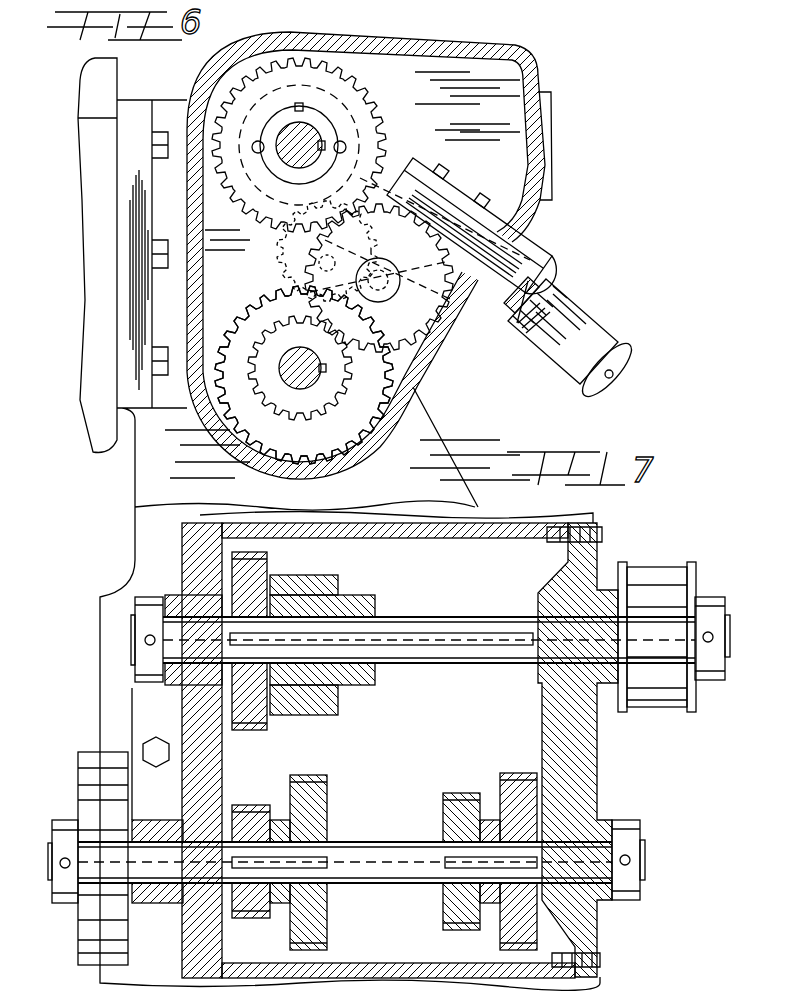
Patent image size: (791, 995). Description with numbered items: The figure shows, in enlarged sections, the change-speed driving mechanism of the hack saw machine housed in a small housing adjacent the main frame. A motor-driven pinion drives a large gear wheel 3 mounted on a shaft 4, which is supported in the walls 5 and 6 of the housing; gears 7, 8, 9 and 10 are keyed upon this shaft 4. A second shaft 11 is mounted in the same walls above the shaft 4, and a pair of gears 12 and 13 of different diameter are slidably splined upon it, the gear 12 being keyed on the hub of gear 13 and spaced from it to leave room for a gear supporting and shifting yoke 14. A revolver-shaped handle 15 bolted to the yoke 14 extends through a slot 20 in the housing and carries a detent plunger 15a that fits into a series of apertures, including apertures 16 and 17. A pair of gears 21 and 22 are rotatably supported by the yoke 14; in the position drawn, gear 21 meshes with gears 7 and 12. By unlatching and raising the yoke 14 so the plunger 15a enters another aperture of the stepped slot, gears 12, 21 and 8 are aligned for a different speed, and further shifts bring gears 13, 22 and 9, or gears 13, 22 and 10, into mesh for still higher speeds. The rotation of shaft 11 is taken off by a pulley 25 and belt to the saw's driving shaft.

In FIG. 7, the large gear wheel 3 is at (88, 928).
In FIG. 6, the shaft 4 is at (318, 372).
In FIG. 7, the shaft 4 is at (380, 868).
In FIG. 7, the wall 5 is at (232, 760).
In FIG. 7, the wall 6 is at (590, 748).
In FIG. 6, the gear 7 is at (282, 350).
In FIG. 7, the gear 7 is at (240, 818).
In FIG. 6, the gear 8 is at (252, 425).
In FIG. 7, the gear 8 is at (305, 795).
In FIG. 7, the gear 9 is at (455, 800).
In FIG. 7, the gear 10 is at (510, 790).
In FIG. 7, the second shaft 11 is at (440, 628).
In FIG. 6, the gear 12 is at (365, 126).
In FIG. 7, the gear 12 is at (258, 575).
In FIG. 7, the gear 13 is at (362, 606).
In FIG. 6, the gear supporting and shifting yoke 14 is at (470, 268).
In FIG. 7, the gear supporting and shifting yoke 14 is at (330, 710).
In FIG. 6, the revolver-shaped handle 15 is at (560, 323).
In FIG. 6, the detent plunger 15a is at (513, 330).
In FIG. 6, the aperture 16 is at (495, 300).
In FIG. 6, the aperture 17 is at (465, 174).
In FIG. 6, the slot 20 is at (543, 195).
In FIG. 6, the gear 21 is at (412, 318).
In FIG. 6, the gear 22 is at (270, 258).
In FIG. 7, the pulley 25 is at (665, 592).